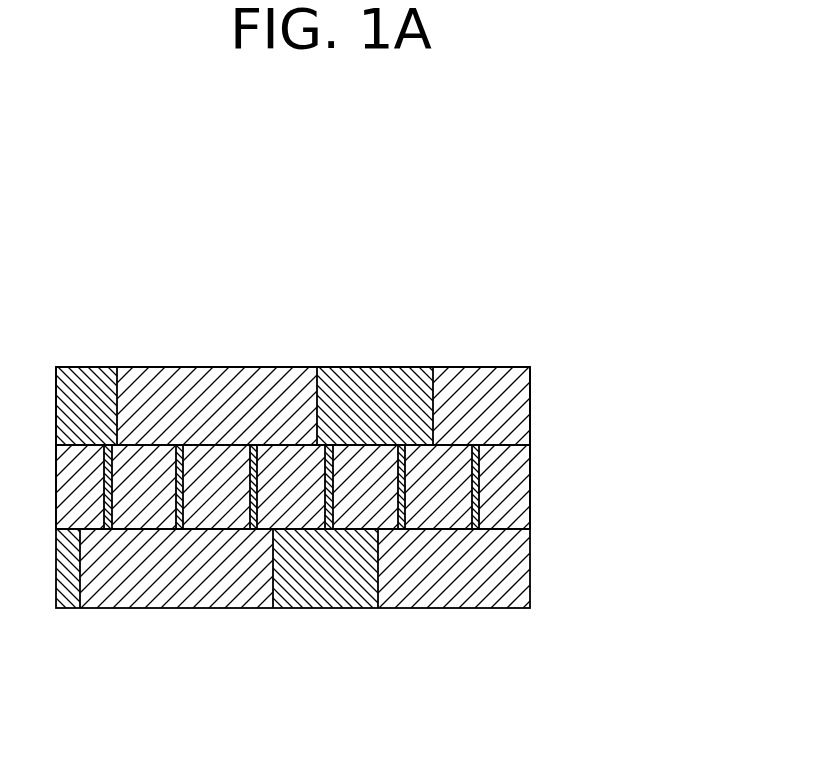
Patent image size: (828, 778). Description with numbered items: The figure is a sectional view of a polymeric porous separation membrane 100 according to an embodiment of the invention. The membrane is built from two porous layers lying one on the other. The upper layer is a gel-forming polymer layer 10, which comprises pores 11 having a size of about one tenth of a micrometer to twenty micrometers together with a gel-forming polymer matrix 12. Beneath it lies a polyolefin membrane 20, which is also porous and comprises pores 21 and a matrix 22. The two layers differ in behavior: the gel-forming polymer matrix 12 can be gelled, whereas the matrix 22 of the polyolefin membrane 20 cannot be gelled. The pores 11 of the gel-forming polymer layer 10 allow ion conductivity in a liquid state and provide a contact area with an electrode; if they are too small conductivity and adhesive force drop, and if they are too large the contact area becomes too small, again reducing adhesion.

The multilayer ceramic device 100 is at (600, 305).
The gel-forming polymer layer 10 is at (213, 272).
The pores 11 is at (212, 366).
The gel-forming polymer matrix 12 is at (371, 366).
The polyolefin membrane 20 is at (630, 450).
The pores 21 is at (478, 502).
The matrix 22 is at (531, 448).